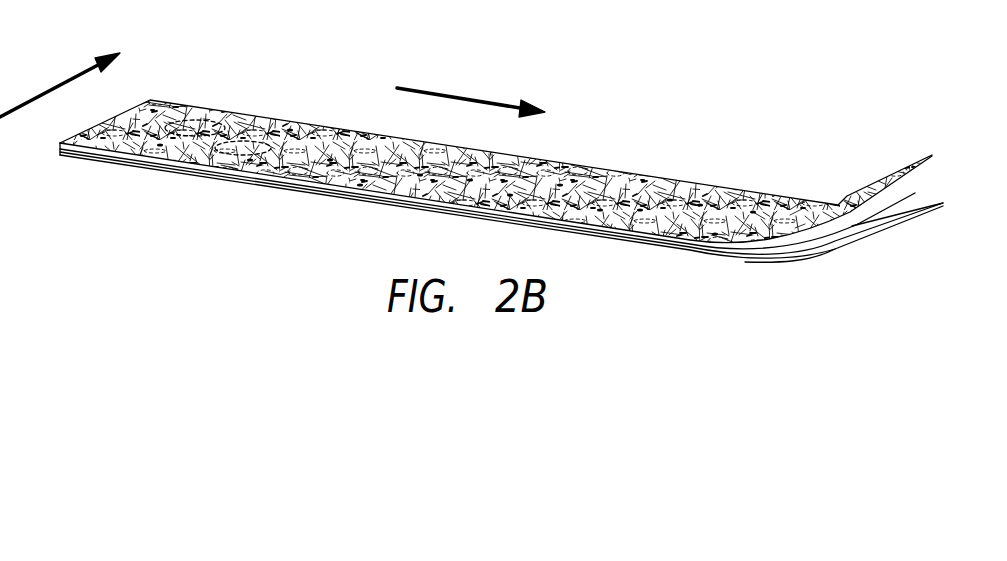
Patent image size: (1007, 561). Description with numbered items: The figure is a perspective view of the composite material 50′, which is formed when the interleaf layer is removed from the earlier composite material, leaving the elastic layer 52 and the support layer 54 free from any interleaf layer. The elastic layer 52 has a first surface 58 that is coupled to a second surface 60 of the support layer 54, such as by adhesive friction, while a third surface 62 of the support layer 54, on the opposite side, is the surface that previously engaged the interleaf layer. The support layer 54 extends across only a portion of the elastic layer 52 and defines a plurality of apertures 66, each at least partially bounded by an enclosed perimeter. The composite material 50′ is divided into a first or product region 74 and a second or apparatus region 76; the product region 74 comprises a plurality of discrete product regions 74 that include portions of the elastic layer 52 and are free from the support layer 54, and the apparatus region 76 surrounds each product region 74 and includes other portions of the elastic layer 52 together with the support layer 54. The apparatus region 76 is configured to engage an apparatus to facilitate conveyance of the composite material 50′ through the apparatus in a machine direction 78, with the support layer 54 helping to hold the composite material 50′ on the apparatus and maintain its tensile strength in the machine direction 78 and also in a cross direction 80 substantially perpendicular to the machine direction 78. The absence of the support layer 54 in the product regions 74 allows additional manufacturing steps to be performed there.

The composite material 50′ is at (898, 112).
The elastic layer 52 is at (888, 177).
The support layer 54 is at (872, 238).
The first surface 58 is at (893, 195).
The second surface 60 is at (862, 233).
The third surface 62 is at (822, 259).
The apertures 66 is at (214, 114).
The product region 74 is at (715, 233).
The apparatus region 76 is at (803, 220).
The machine direction 78 is at (455, 97).
The cross direction 80 is at (53, 80).